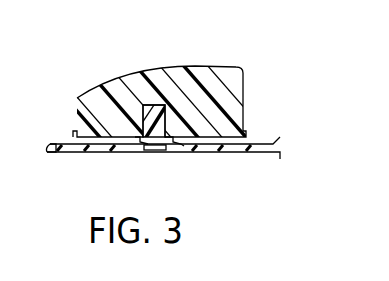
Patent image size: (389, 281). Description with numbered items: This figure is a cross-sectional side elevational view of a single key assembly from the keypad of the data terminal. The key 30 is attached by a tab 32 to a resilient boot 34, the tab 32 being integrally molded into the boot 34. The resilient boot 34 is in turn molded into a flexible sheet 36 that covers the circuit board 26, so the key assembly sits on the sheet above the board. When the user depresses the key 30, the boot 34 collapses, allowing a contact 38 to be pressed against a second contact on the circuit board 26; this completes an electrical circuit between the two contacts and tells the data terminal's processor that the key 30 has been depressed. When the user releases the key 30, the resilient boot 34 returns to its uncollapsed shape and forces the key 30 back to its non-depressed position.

The circuit board 26 is at (213, 158).
The key 30 is at (113, 85).
The tab 32 is at (168, 110).
The resilient boot 34 is at (140, 142).
The flexible sheet 36 is at (53, 147).
The contact 38 is at (153, 148).